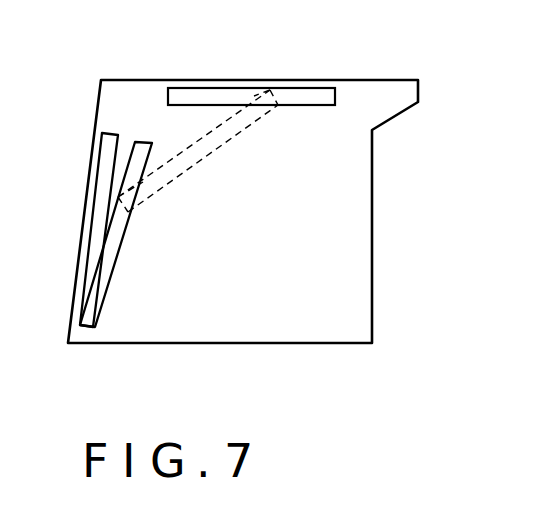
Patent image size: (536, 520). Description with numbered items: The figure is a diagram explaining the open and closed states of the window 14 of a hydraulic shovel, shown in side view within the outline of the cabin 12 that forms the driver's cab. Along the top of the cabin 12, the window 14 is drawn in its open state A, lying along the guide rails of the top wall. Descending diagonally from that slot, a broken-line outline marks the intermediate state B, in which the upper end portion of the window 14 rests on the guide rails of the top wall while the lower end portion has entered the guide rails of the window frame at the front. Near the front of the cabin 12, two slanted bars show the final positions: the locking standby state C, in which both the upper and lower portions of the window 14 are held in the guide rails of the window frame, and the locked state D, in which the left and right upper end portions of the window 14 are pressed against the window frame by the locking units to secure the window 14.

The cabin 12 is at (241, 332).
The window 14 is at (207, 93).
The open state A is at (320, 105).
The intermediate state B is at (208, 152).
The locking standby state C is at (122, 240).
The locked state D is at (102, 170).